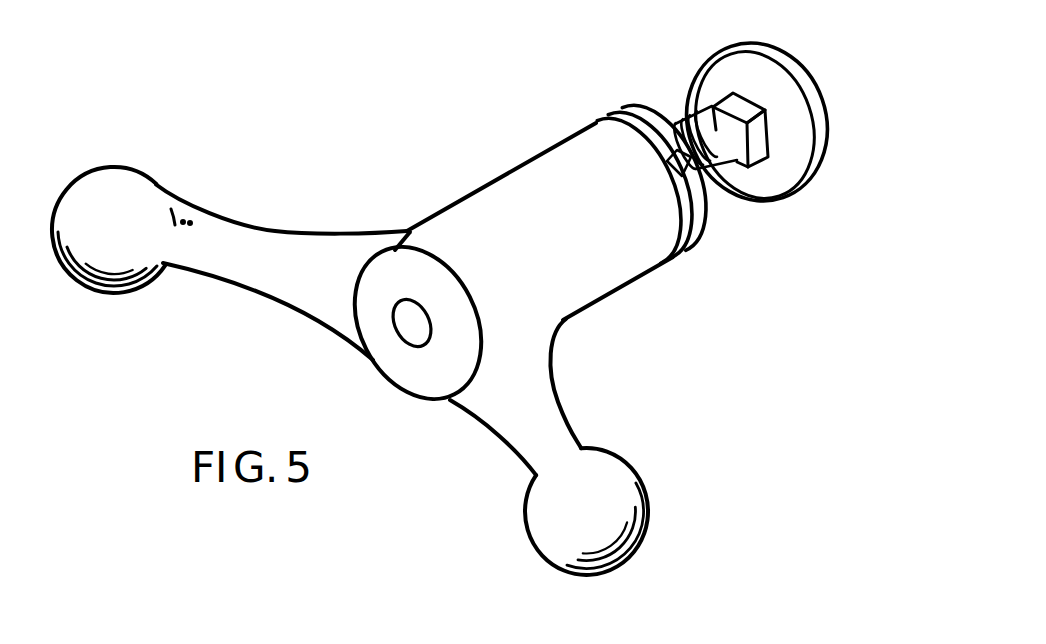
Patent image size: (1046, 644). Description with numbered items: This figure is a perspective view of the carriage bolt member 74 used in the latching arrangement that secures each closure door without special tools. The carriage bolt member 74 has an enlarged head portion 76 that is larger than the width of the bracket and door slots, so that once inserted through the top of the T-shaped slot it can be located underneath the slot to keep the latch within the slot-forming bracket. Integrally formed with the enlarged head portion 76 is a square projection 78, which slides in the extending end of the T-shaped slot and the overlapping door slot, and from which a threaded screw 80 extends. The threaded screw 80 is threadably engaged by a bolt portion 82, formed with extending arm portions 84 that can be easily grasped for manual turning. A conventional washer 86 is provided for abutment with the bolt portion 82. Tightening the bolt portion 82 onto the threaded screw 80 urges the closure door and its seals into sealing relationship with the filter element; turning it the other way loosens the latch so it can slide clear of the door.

The carriage bolt member 74 is at (474, 168).
The enlarged head portion 76 is at (793, 85).
The square projection 78 is at (762, 143).
The threaded screw 80 is at (683, 128).
The bolt portion 82 is at (612, 280).
The arm portions 84 is at (304, 250).
The washer 86 is at (718, 222).